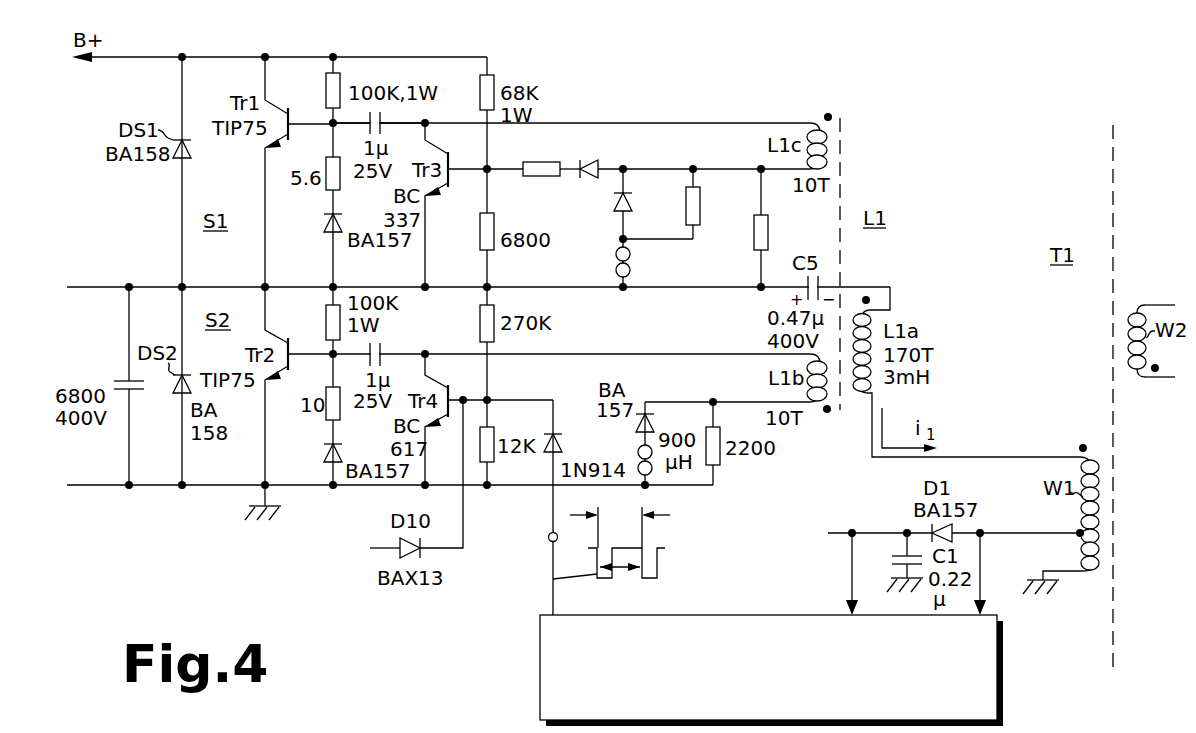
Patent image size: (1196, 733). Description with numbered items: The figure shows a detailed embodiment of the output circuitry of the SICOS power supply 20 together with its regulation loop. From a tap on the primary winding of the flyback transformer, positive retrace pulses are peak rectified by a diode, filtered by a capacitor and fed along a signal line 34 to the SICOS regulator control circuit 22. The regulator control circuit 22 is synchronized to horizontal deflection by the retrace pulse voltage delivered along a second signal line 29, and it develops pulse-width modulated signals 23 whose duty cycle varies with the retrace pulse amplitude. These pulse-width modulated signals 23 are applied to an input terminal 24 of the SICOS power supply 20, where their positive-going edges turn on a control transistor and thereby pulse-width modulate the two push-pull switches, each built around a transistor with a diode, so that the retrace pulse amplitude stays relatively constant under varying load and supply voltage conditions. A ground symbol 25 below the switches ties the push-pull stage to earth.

The SICOS power supply 20 is at (633, 98).
The SICOS regulator control circuit 22 is at (1002, 660).
The pulse-width modulated signals 23 is at (612, 578).
The input terminal 24 is at (550, 537).
The ground connection 25 is at (281, 502).
The signal line 29 is at (980, 579).
The signal line 34 is at (852, 586).